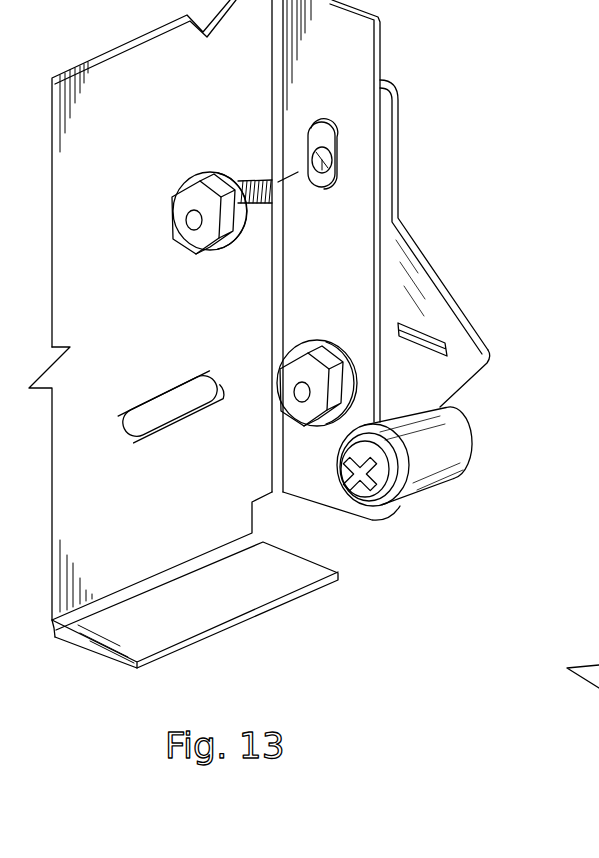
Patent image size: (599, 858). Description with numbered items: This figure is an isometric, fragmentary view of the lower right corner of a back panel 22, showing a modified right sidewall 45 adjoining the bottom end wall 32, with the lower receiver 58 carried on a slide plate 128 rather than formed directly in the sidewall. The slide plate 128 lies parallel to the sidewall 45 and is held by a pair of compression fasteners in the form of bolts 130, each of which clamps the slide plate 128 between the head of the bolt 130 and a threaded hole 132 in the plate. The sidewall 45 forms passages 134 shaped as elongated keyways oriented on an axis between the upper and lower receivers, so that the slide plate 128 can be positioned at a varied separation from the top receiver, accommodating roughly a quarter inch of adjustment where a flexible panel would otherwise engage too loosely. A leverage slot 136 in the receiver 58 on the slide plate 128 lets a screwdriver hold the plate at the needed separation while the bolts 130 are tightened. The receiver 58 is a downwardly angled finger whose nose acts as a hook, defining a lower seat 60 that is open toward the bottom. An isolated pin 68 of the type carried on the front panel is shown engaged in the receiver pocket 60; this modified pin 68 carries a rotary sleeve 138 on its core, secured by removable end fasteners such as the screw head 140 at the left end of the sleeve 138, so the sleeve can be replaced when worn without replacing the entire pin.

The back panel 22 is at (184, 131).
The right sidewall 45 is at (360, 43).
The passage 134 is at (314, 123).
The threaded hole 132 is at (324, 184).
The slide plate 128 is at (393, 146).
The lower receiver 58 is at (487, 352).
The leverage slot 136 is at (425, 330).
The bolt 130 is at (195, 240).
The sleeve 138 is at (437, 430).
The lower seat 60 is at (413, 408).
The screw head 140 is at (378, 503).
The pin 68 is at (456, 495).
The bottom end wall 32 is at (202, 602).